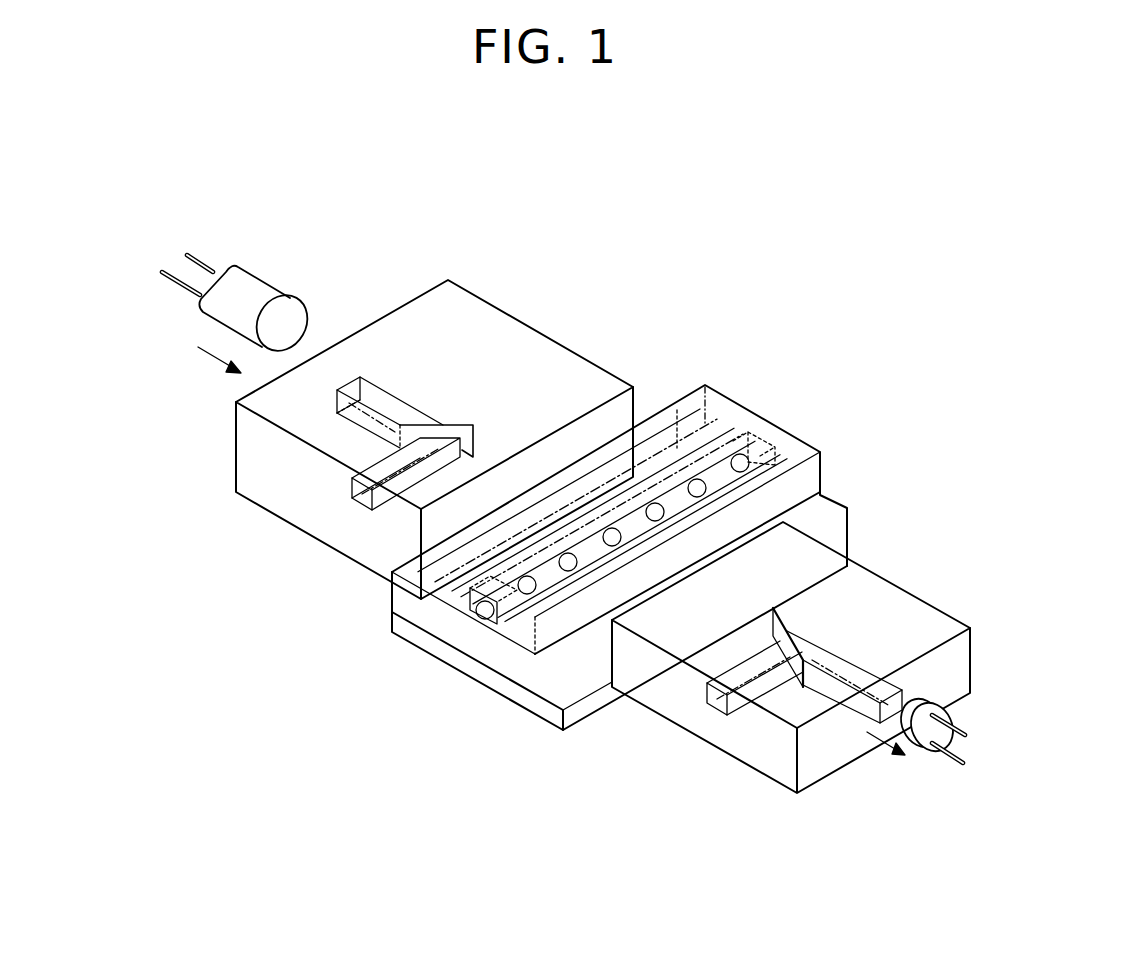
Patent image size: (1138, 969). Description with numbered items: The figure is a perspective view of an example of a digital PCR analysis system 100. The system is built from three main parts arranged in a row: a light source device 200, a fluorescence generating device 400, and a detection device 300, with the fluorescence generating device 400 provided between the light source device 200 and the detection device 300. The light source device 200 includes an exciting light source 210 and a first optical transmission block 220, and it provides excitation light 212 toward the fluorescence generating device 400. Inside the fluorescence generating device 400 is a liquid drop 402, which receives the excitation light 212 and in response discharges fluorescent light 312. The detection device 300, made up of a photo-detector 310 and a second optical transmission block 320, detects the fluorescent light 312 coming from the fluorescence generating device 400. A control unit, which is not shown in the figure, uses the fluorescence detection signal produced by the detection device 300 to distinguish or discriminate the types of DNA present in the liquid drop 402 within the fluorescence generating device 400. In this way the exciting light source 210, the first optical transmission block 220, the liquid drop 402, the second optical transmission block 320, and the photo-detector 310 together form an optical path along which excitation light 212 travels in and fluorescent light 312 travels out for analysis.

The digital PCR analysis system 100 is at (868, 256).
The light source device 200 is at (377, 152).
The exciting light source 210 is at (257, 288).
The excitation light 212 is at (213, 373).
The first optical transmission block 220 is at (530, 352).
The detection device 300 is at (962, 489).
The photo-detector 310 is at (925, 708).
The fluorescent light 312 is at (892, 760).
The second optical transmission block 320 is at (878, 590).
The fluorescence generating device 400 is at (789, 398).
The liquid drop 402 is at (486, 611).